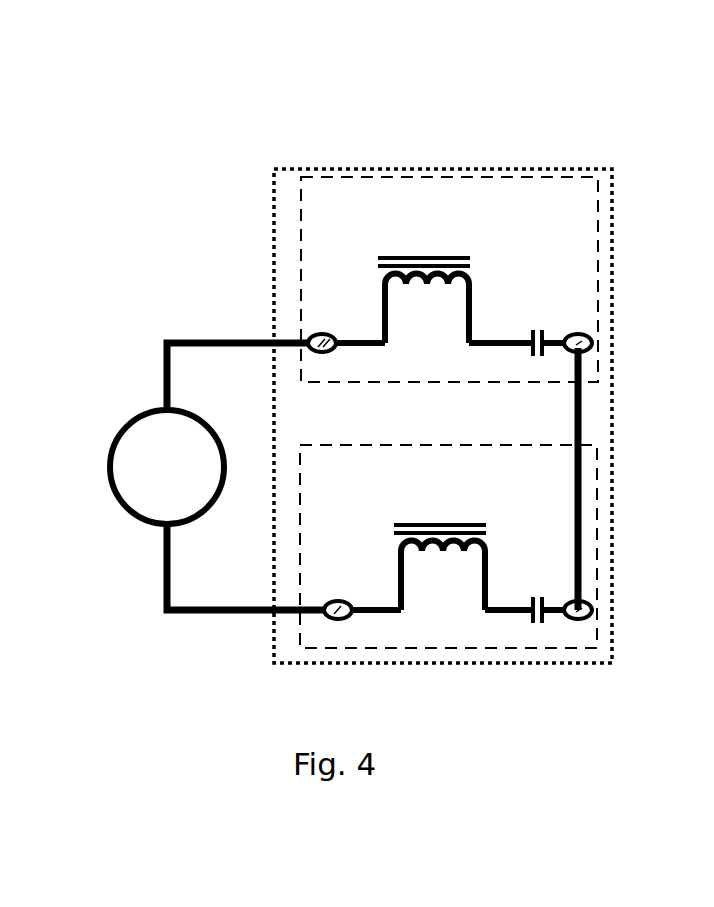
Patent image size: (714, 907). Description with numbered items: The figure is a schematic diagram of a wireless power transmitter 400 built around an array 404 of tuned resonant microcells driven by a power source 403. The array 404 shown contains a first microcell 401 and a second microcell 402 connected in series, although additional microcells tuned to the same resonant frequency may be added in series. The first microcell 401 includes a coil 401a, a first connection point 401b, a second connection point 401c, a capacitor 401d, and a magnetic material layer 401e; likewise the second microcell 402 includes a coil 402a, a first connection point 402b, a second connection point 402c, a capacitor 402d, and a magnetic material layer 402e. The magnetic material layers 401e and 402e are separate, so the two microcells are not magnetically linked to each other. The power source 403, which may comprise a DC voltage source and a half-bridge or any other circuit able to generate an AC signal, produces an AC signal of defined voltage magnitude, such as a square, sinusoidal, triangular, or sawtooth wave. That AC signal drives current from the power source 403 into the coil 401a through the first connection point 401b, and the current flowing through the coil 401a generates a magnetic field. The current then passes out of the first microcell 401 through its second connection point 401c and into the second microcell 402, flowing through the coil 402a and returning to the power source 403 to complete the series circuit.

The wireless power transmitter 400 is at (265, 72).
The first microcell 401 is at (390, 181).
The coil 401a is at (425, 296).
The first connection point 401b is at (326, 335).
The second connection point 401c is at (580, 339).
The capacitor 401d is at (527, 330).
The magnetic material layer 401e is at (442, 258).
The second microcell 402 is at (446, 650).
The coil 402a is at (433, 563).
The first connection point 402b is at (342, 601).
The second connection point 402c is at (576, 620).
The capacitor 402d is at (532, 598).
The magnetic material layer 402e is at (458, 525).
The power source 403 is at (110, 486).
The array 404 is at (610, 168).